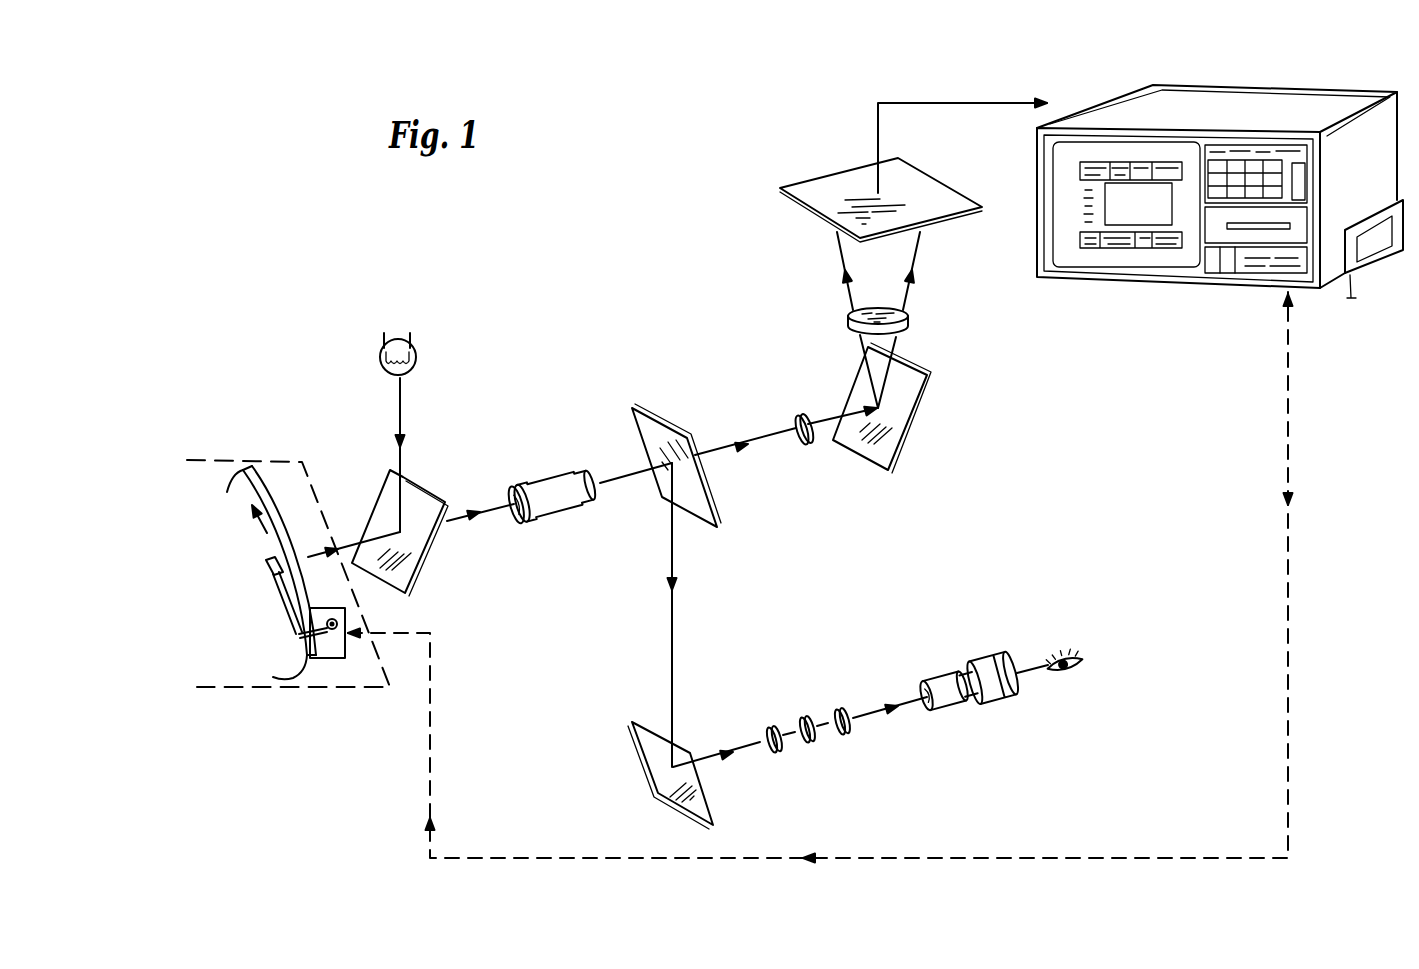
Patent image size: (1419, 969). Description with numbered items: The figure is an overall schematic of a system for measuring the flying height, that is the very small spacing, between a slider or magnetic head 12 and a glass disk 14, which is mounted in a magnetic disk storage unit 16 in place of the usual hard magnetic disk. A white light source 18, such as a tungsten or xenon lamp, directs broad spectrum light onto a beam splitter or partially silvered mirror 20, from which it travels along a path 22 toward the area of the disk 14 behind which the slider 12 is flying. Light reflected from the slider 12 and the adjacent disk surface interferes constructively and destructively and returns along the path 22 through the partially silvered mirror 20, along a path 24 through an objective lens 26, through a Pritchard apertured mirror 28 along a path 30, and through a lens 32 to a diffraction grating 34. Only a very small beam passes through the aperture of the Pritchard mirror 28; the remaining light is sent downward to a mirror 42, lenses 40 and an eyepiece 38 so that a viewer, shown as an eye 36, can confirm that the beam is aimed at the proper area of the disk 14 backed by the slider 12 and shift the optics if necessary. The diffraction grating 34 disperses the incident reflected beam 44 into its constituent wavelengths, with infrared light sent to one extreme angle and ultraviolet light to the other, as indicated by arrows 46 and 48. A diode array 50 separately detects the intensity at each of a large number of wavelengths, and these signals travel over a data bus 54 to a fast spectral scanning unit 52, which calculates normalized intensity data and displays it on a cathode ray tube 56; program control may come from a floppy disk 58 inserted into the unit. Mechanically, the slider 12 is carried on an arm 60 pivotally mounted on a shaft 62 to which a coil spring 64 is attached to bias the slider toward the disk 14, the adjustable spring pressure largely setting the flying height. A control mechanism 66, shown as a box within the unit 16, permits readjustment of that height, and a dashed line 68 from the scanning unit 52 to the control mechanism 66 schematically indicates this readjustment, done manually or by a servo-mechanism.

The slider or magnetic head 12 is at (270, 573).
The glass disk 14 is at (253, 492).
The magnetic disk storage unit 16 is at (262, 693).
The white light source 18 is at (417, 367).
The beam splitter or partially silvered mirror 20 is at (415, 570).
The path 22 is at (353, 543).
The path 24 is at (462, 521).
The objective lens 26 is at (552, 470).
The Pritchard apertured mirror 28 is at (662, 420).
The path 30 is at (728, 452).
The lens 32 is at (795, 418).
The diffraction grating 34 is at (898, 430).
The eye of viewer 36 is at (1075, 653).
The eyepiece 38 is at (972, 670).
The lenses 40 is at (848, 701).
The mirror 42 is at (658, 772).
The reflected beam of light 44 is at (820, 425).
The arrow 46 is at (838, 250).
The arrow 48 is at (920, 250).
The diode array 50 is at (937, 182).
The fast spectral scanning unit 52 is at (1196, 294).
The data bus 54 is at (871, 140).
The cathode ray tube 56 is at (1122, 225).
The floppy disk 58 is at (1272, 232).
The arm 60 is at (283, 617).
The shaft 62 is at (305, 646).
The coil spring 64 is at (347, 650).
The control mechanism 66 is at (344, 613).
The dashed line 68 is at (432, 725).